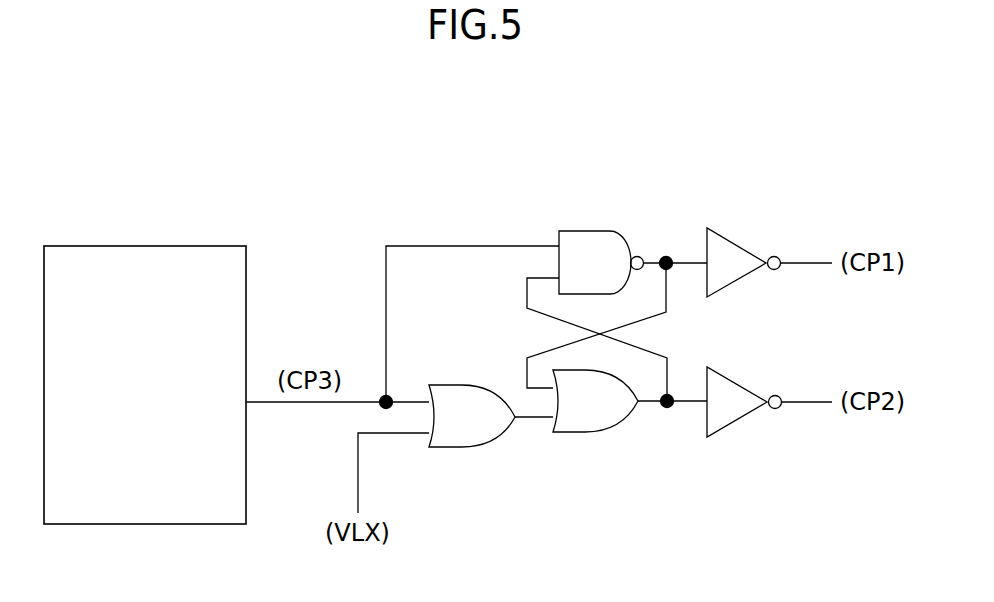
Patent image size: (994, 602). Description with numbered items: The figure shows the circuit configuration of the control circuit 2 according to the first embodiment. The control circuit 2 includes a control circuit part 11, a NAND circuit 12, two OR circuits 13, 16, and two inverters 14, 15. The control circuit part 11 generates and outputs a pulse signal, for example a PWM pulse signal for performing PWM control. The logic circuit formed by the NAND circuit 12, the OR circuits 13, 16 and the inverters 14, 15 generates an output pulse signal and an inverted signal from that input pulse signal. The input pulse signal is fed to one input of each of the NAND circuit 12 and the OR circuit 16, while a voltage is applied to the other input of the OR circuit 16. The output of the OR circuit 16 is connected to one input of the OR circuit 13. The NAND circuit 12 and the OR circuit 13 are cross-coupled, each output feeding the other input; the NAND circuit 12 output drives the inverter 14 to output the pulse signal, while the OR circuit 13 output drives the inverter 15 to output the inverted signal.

The control circuit 2 is at (605, 311).
The control circuit part 11 is at (174, 246).
The NAND circuit 12 is at (583, 231).
The OR circuit 13 is at (572, 432).
The inverter 14 is at (734, 240).
The inverter 15 is at (740, 420).
The OR circuit 16 is at (448, 447).